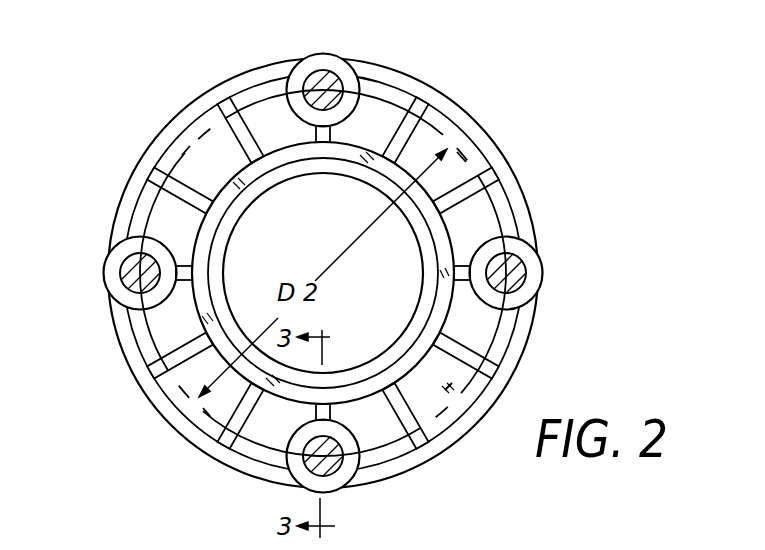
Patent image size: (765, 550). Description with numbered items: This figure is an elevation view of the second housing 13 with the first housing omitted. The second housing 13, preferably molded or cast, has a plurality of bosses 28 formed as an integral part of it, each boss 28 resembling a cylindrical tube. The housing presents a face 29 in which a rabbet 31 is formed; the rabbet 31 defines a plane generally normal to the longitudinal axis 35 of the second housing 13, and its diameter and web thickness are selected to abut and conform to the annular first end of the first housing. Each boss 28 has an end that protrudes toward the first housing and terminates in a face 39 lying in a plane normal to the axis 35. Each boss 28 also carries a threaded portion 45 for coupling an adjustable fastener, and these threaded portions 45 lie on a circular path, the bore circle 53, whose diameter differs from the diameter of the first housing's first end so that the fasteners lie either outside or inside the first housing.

The second housing 13 is at (448, 93).
The bosses 28 is at (320, 271).
The face 29 is at (470, 158).
The rabbet 31 is at (372, 186).
The longitudinal axis 35 is at (323, 273).
The face 39 is at (105, 268).
The threaded portion 45 is at (348, 65).
The bore circle 53 is at (200, 137).